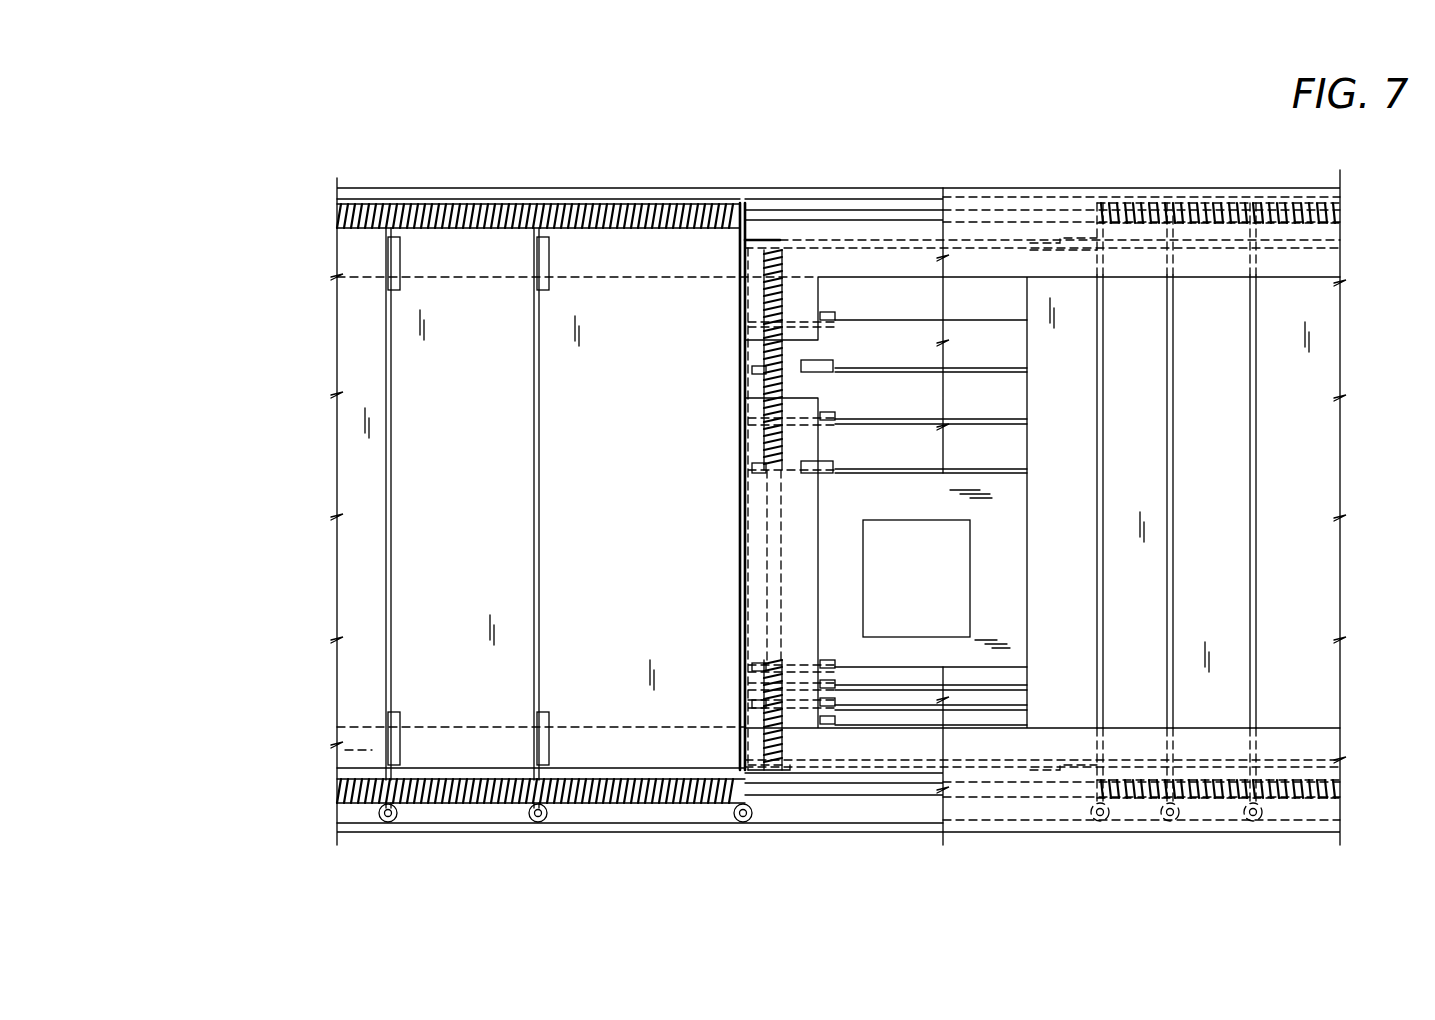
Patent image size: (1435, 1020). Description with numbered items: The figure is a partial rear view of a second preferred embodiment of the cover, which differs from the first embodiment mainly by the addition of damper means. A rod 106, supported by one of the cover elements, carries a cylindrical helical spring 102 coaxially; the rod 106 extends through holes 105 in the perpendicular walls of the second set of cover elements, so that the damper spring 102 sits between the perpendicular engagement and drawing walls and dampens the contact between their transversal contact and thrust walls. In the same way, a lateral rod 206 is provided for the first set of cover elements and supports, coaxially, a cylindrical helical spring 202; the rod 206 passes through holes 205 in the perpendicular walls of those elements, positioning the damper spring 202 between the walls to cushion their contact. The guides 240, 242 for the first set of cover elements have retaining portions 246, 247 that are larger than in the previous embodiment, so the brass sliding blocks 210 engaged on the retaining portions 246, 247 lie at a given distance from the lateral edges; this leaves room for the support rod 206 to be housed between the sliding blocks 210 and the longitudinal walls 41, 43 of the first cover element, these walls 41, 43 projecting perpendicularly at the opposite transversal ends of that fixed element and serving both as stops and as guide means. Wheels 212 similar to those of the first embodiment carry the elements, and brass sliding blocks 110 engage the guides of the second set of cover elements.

The longitudinal wall 41 is at (357, 829).
The longitudinal wall 43 is at (400, 197).
The cylindrical helical spring 102 is at (767, 293).
The hole 105 is at (763, 370).
The rod 106 is at (772, 264).
The brass sliding block 110 is at (834, 365).
The cylindrical helical spring 202 is at (659, 808).
The hole 205 is at (550, 795).
The lateral rod 206 is at (985, 232).
The brass sliding block 210 is at (392, 272).
The wheel 212 is at (383, 822).
The guide 240 is at (359, 288).
The guide 242 is at (480, 727).
The retaining portion 246 is at (578, 262).
The retaining portion 247 is at (372, 750).